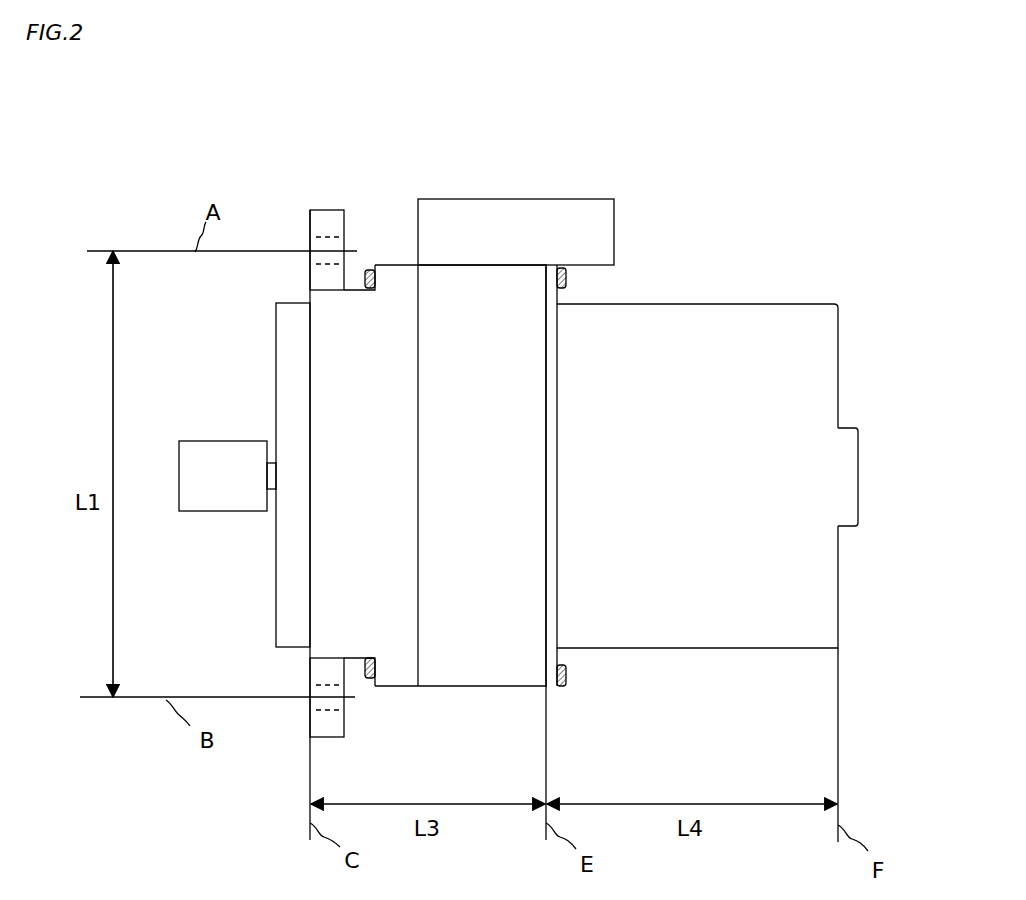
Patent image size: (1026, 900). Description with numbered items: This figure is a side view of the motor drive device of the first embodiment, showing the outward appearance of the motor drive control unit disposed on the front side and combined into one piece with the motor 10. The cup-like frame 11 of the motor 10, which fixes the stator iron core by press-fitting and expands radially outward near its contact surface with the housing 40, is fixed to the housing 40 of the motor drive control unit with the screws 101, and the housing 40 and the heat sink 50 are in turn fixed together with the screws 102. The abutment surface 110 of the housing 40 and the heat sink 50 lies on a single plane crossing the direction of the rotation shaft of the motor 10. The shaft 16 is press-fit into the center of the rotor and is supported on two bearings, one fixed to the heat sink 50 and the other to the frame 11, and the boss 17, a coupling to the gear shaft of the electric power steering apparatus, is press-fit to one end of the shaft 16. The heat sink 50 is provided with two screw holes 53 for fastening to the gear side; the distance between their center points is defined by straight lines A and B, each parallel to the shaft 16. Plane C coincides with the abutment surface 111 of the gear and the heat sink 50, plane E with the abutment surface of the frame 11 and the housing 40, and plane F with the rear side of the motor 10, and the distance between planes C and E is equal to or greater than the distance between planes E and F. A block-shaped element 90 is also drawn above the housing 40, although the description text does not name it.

The motor 10 is at (827, 562).
The frame 11 is at (780, 307).
The shaft 16 is at (272, 479).
The boss 17 is at (216, 447).
The housing 40 is at (486, 677).
The heat sink 50 is at (316, 300).
The screw holes 53 is at (323, 248).
The magnet 90 is at (580, 200).
The screws 101 is at (566, 278).
The screws 102 is at (366, 268).
The abutment surface 110 is at (418, 686).
The abutment surface 111 is at (293, 630).